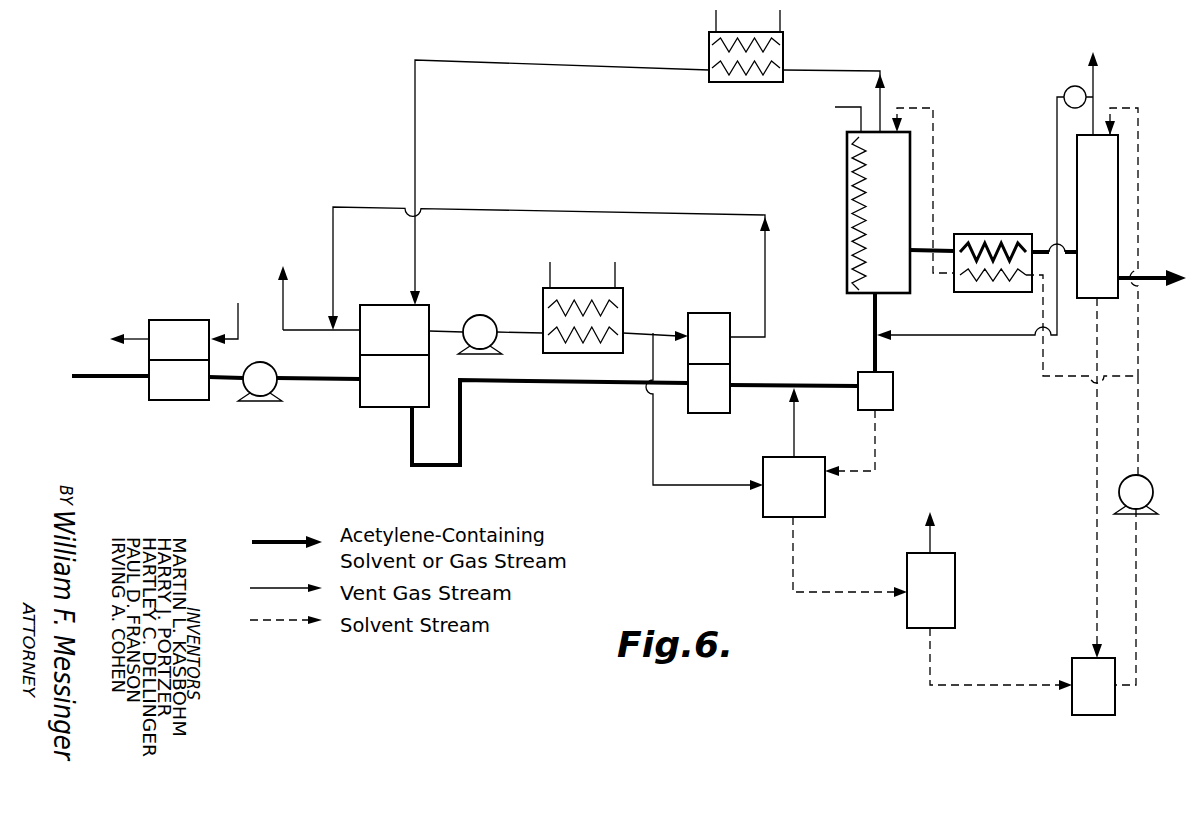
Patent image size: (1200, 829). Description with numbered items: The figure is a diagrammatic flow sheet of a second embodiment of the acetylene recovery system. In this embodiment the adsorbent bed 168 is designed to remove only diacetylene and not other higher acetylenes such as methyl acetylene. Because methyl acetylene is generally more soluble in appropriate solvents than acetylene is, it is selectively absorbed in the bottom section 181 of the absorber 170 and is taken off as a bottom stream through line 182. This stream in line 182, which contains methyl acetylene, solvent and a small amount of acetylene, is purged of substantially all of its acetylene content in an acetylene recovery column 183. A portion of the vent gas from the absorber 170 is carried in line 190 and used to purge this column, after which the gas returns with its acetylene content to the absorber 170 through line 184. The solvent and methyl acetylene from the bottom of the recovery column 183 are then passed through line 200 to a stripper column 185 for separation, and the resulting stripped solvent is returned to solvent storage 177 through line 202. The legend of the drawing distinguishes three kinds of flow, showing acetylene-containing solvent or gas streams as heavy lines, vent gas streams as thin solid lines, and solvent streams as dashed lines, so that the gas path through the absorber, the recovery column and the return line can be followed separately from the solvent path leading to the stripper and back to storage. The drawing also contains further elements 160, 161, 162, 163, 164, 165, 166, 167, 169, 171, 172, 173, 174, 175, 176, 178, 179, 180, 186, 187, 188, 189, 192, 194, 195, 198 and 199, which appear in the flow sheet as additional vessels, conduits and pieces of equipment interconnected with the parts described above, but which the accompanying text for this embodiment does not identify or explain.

The acetylene-containing gas stream inlet 160 is at (80, 397).
The lower section of absorber 161 is at (187, 400).
The upper section of absorber 162 is at (178, 320).
The vent gas line 163 is at (244, 323).
The vent gas outlet 164 is at (140, 336).
The blower 165 is at (264, 404).
The lower section of degassing column 166 is at (370, 407).
The upper section of degassing column 167 is at (375, 305).
The adsorbent bed 168 is at (707, 413).
The upper section of column 169 is at (707, 313).
The absorber 170 is at (847, 192).
The solvent line 171 is at (938, 244).
The vent gas line 172 is at (846, 70).
The heat exchanger condenser 173 is at (736, 84).
The vent gas return line 174 is at (833, 318).
The heat exchanger 175 is at (1006, 234).
The solvent line 176 is at (1043, 362).
The solvent storage 177 is at (1095, 715).
The stripping column 178 is at (1085, 298).
The vent gas line 179 is at (1093, 79).
The acetylene product line 180 is at (1153, 287).
The bottom section 181 is at (893, 395).
The line 182 is at (876, 445).
The acetylene recovery column 183 is at (775, 517).
The line 184 is at (795, 434).
The stripper column 185 is at (955, 597).
The vent gas line 186 is at (312, 330).
The gas line 187 is at (447, 330).
The blower 188 is at (495, 320).
The recycle vent gas line 189 is at (605, 212).
The line 190 is at (670, 486).
The heat exchanger 192 is at (575, 288).
The solvent feed line 194 is at (1138, 193).
The solvent line 195 is at (1096, 532).
The pump 198 is at (1145, 516).
The solvent line 199 is at (1138, 403).
The line 200 is at (835, 593).
The line 202 is at (990, 685).